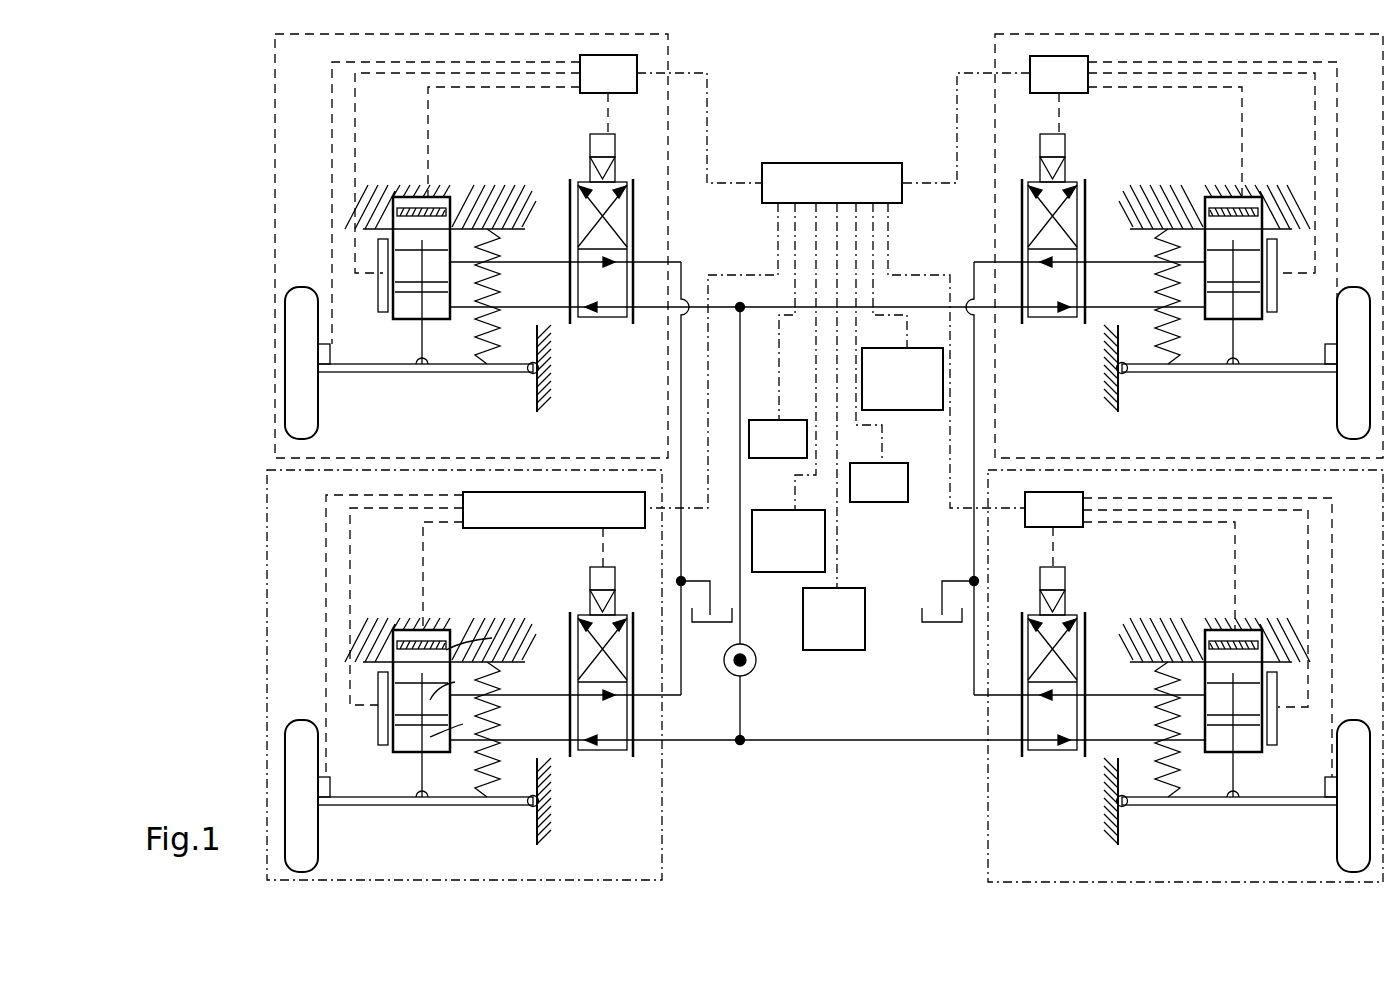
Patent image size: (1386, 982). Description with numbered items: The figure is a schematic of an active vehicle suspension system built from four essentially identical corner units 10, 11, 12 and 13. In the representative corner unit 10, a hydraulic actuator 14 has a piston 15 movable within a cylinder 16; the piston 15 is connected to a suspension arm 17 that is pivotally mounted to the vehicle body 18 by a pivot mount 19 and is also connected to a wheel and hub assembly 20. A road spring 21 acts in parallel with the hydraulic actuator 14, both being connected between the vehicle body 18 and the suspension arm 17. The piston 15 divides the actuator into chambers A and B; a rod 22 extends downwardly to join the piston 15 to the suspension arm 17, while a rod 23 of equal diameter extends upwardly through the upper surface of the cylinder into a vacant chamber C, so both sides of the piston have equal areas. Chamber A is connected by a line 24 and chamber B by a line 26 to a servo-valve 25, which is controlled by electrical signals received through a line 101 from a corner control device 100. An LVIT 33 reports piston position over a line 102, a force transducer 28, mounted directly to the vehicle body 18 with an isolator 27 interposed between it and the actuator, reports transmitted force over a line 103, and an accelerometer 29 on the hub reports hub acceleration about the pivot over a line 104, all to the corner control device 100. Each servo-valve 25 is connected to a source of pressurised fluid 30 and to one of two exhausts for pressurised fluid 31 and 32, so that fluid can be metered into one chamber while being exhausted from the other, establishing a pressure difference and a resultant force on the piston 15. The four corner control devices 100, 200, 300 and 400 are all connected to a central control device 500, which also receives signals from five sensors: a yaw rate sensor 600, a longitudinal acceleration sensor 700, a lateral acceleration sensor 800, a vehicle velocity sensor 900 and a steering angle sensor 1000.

The corner unit 10 is at (256, 562).
The corner unit 11 is at (446, 246).
The corner unit 12 is at (1150, 246).
The corner unit 13 is at (1142, 676).
The hydraulic actuator 14 is at (407, 728).
The piston 15 is at (346, 689).
The cylinder 16 is at (446, 742).
The suspension arm 17 is at (370, 806).
The vehicle body 18 is at (375, 640).
The pivot mount 19 is at (533, 804).
The wheel and hub assembly 20 is at (297, 732).
The road spring 21 is at (500, 768).
The rod 22 is at (433, 757).
The rod 23 is at (422, 682).
The line 24 is at (550, 696).
The servo-valve 25 is at (607, 752).
The line 26 is at (560, 740).
The isolator 27 is at (447, 648).
The force transducer 28 is at (443, 636).
The accelerometer 29 is at (326, 790).
The source of pressurised fluid 30 is at (746, 670).
The exhaust for pressurised fluid 31 is at (698, 623).
The exhaust for pressurised fluid 32 is at (958, 623).
The LVIT 33 is at (378, 688).
The corner control device 100 is at (547, 530).
The line 101 is at (600, 545).
The line 102 is at (350, 585).
The line 103 is at (455, 570).
The line 104 is at (325, 573).
The control device 200 is at (608, 74).
The control device 300 is at (1059, 74).
The control device 400 is at (1054, 509).
The central control device 500 is at (835, 163).
The yaw rate sensor 600 is at (768, 458).
The longitudinal acceleration sensor 700 is at (760, 572).
The lateral acceleration sensor 800 is at (803, 640).
The velocity sensor 900 is at (900, 502).
The steering angle sensor 1000 is at (885, 410).